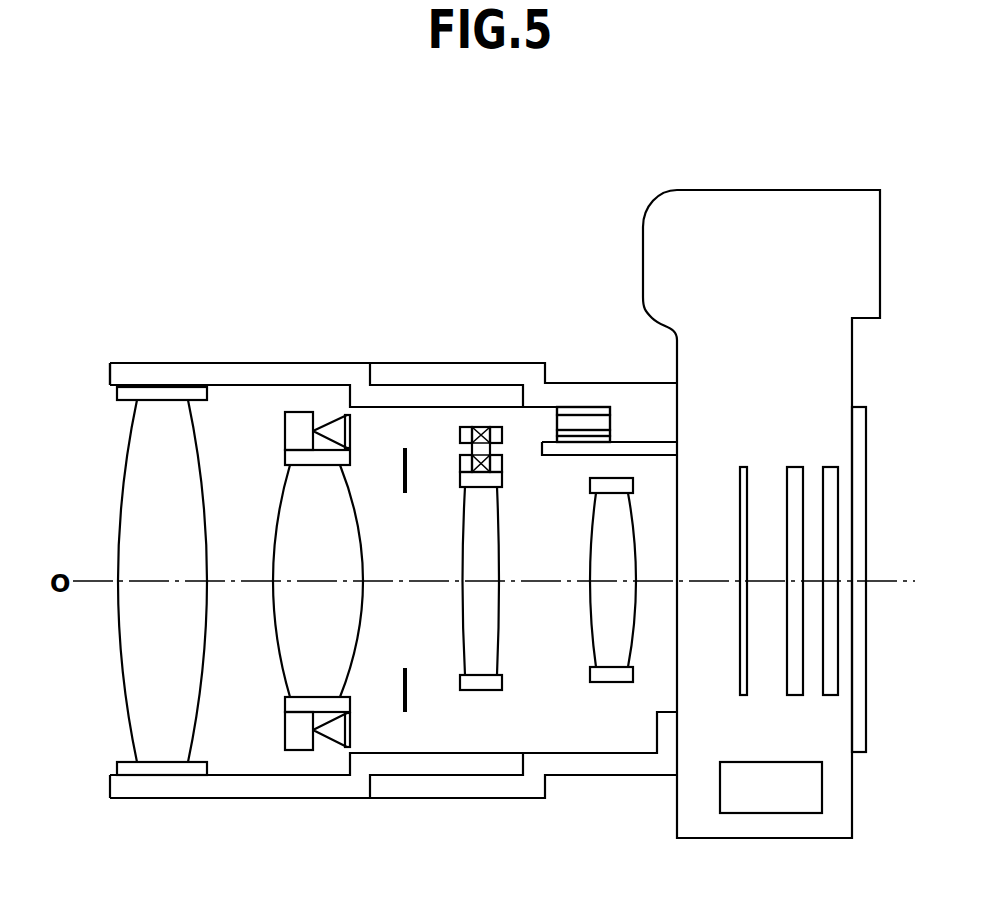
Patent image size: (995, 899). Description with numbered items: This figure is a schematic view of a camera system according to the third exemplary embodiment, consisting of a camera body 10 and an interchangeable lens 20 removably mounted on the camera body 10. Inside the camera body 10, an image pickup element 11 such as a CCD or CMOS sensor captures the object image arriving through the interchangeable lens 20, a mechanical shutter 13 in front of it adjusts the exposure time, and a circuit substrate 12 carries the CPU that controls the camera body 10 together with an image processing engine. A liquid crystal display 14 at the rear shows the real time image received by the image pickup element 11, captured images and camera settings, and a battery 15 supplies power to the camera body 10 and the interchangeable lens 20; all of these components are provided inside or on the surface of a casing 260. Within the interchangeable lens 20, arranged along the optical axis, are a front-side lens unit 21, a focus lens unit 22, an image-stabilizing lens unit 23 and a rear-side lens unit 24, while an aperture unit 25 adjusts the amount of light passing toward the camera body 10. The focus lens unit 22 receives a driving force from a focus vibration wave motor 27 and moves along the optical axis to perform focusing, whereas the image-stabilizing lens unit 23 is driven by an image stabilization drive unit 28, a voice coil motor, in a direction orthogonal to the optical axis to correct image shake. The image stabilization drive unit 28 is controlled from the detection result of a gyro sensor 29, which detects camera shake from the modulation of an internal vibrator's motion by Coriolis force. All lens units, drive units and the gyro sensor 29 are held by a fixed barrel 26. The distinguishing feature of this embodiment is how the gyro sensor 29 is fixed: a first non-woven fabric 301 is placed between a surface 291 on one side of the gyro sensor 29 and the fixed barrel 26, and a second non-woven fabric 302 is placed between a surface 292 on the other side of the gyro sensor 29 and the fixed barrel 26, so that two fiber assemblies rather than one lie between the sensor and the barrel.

The camera body 10 is at (788, 160).
The image pickup element 11 is at (791, 467).
The circuit substrate 12 is at (840, 528).
The mechanical shutter 13 is at (743, 467).
The liquid crystal display 14 is at (867, 665).
The battery 15 is at (822, 782).
The interchangeable lens 20 is at (358, 232).
The front-side lens unit 21 is at (122, 678).
The focus lens unit 22 is at (280, 652).
The image-stabilizing lens unit 23 is at (462, 645).
The rear-side lens unit 24 is at (596, 634).
The aperture unit 25 is at (405, 448).
The fixed barrel 26 is at (640, 777).
The focus vibration wave motor 27 is at (297, 410).
The image stabilization drive unit 28 is at (480, 427).
The gyro sensor 29 is at (557, 425).
The surface on one side of the gyro sensor 291 is at (570, 415).
The surface on the other side of the gyro sensor 292 is at (578, 437).
The first non-woven fabric 301 is at (585, 407).
The second non-woven fabric 302 is at (613, 435).
The casing 260 is at (843, 822).